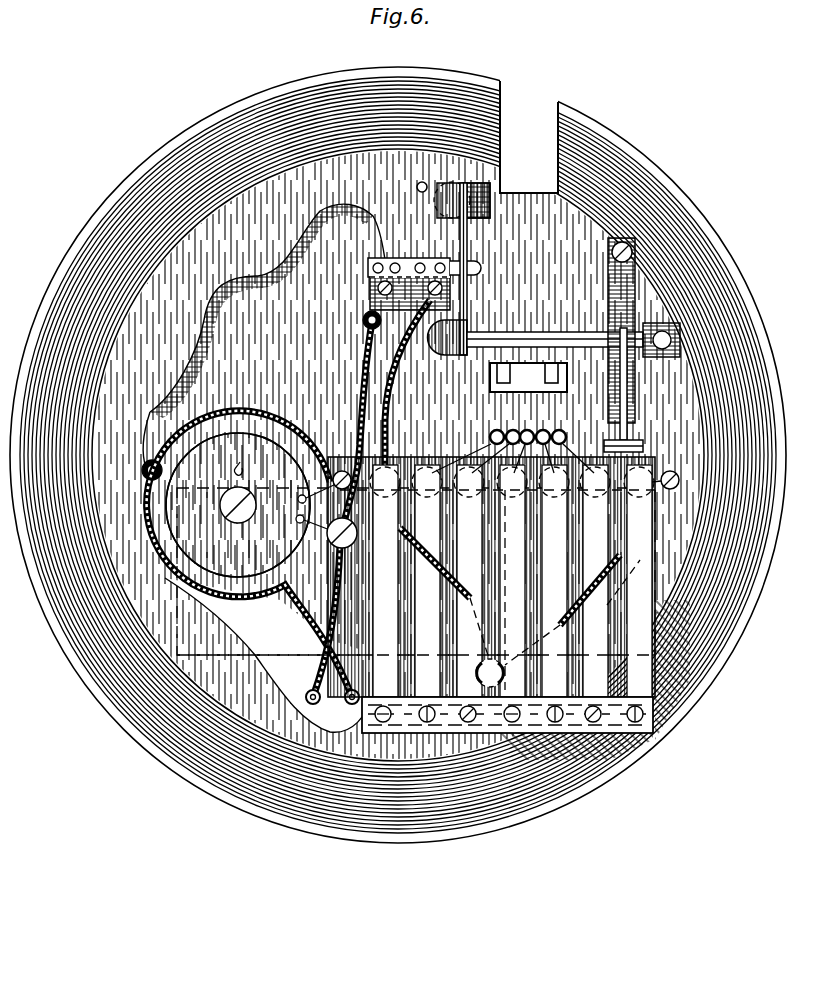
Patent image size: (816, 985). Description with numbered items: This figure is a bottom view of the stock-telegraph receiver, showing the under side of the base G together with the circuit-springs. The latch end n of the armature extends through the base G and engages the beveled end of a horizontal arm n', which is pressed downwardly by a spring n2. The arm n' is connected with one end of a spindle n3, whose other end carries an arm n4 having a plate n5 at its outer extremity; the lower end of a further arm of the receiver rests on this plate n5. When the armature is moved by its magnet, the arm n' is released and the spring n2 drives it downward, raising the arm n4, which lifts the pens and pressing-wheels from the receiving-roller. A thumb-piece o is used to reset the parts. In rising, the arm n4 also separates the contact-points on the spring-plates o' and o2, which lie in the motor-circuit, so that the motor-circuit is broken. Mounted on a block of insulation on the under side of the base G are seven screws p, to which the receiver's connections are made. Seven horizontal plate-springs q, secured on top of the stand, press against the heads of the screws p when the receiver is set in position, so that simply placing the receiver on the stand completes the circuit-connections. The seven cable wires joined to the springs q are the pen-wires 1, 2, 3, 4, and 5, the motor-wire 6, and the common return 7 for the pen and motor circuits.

The base G is at (398, 446).
The latch end n is at (608, 385).
The horizontal arm n' is at (625, 435).
The spring n2 is at (608, 330).
The spindle n3 is at (554, 335).
The arm n4 is at (476, 269).
The plate n5 is at (462, 191).
The thumb-piece o is at (422, 187).
The spring-plate o' is at (433, 262).
The spring-plate o2 is at (414, 273).
The screws p is at (358, 509).
The springs q is at (505, 622).
The pen-wire 1 is at (427, 733).
The pen-wire 2 is at (468, 733).
The pen-wire 3 is at (512, 733).
The pen-wire 4 is at (554, 733).
The pen-wire 5 is at (597, 733).
The motor-wire 6 is at (385, 733).
The common return 7 is at (637, 733).